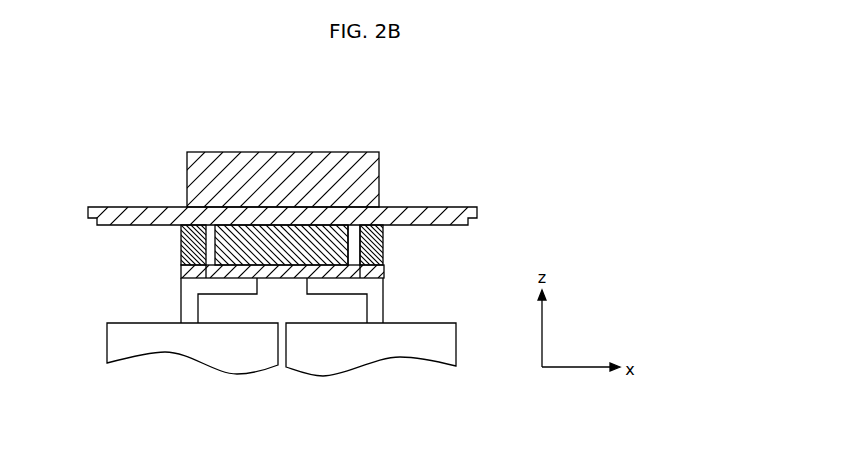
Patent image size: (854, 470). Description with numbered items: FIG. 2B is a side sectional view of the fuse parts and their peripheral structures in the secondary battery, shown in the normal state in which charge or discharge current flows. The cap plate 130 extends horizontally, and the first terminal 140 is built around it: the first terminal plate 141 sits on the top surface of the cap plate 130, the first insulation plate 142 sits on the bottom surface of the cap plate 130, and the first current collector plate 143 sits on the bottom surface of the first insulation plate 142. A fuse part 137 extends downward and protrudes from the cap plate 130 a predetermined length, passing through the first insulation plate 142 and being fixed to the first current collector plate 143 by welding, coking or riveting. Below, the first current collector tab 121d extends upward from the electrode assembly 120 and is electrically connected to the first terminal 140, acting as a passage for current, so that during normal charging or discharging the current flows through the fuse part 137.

The electrode assembly 120 is at (367, 369).
The first current collector tab 121d is at (375, 305).
The cap plate 130 is at (118, 212).
The fuse part 137 is at (352, 246).
The first terminal 140 is at (284, 185).
The first terminal plate 141 is at (285, 165).
The first insulation plate 142 is at (373, 259).
The first current collector plate 143 is at (183, 267).